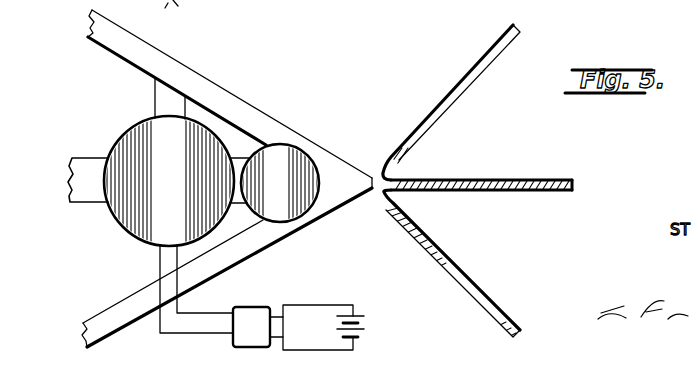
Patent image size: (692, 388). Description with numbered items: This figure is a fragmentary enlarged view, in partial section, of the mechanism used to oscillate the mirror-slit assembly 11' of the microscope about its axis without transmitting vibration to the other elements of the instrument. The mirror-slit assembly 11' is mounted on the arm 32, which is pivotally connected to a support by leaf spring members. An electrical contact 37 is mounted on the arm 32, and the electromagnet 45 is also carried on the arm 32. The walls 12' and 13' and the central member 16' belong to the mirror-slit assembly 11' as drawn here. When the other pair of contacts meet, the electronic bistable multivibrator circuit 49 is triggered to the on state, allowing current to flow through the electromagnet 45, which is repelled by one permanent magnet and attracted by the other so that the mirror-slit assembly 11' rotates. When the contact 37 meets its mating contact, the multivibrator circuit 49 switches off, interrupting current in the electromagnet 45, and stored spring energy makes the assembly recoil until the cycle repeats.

The arm 32 is at (147, 43).
The electromagnet 45 is at (130, 148).
The electrical contact 37 is at (283, 163).
The electronic bistable multivibrator circuit 49 is at (256, 307).
The upper nozzle wall 12' is at (450, 102).
The lower nozzle wall 13' is at (442, 269).
The center divider wall 16' is at (499, 165).
The mirror-slit assembly 11' is at (528, 134).